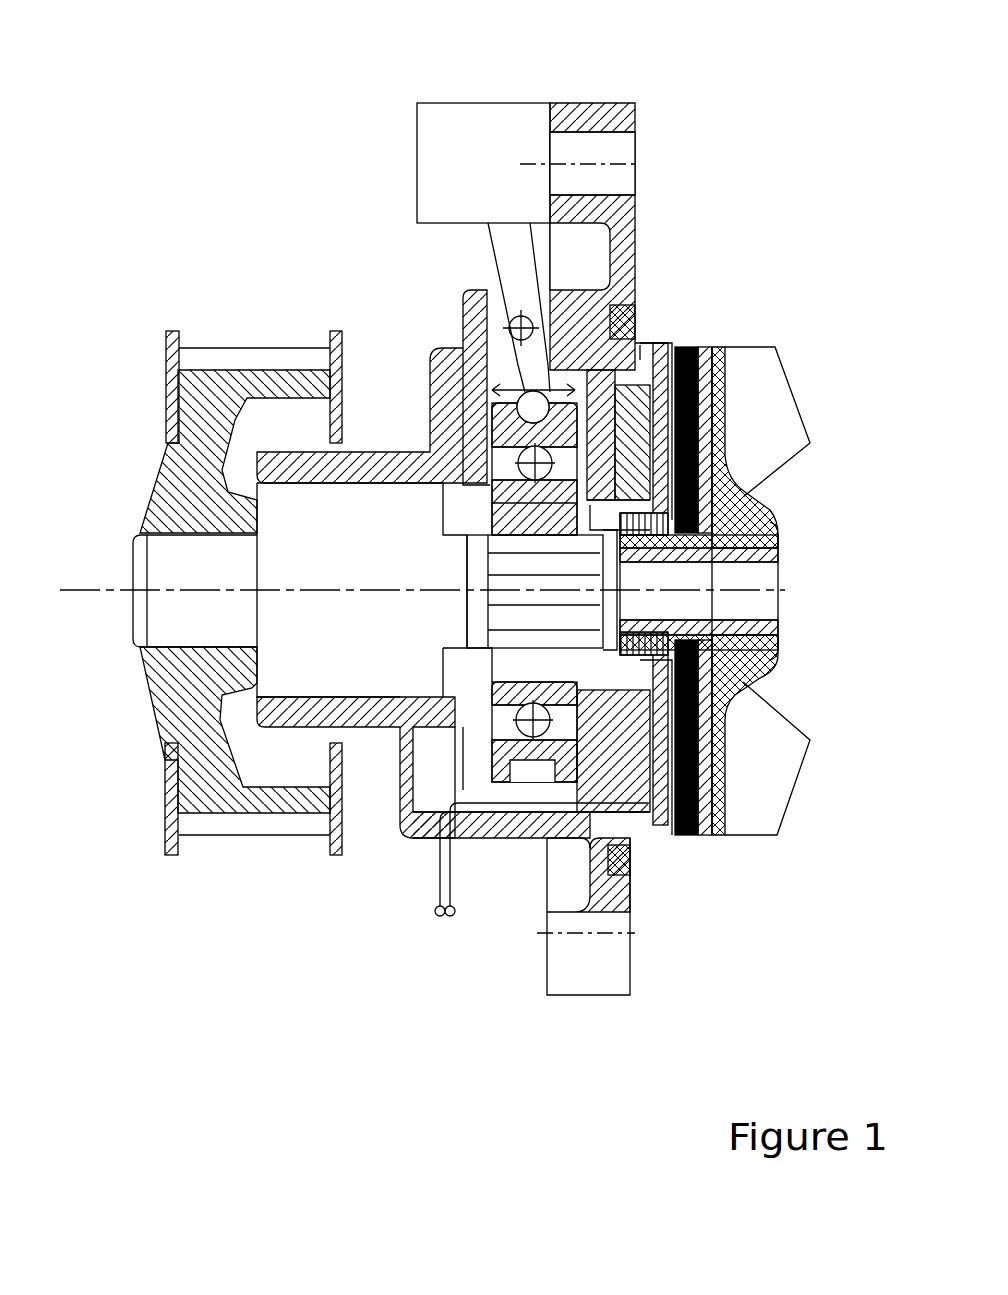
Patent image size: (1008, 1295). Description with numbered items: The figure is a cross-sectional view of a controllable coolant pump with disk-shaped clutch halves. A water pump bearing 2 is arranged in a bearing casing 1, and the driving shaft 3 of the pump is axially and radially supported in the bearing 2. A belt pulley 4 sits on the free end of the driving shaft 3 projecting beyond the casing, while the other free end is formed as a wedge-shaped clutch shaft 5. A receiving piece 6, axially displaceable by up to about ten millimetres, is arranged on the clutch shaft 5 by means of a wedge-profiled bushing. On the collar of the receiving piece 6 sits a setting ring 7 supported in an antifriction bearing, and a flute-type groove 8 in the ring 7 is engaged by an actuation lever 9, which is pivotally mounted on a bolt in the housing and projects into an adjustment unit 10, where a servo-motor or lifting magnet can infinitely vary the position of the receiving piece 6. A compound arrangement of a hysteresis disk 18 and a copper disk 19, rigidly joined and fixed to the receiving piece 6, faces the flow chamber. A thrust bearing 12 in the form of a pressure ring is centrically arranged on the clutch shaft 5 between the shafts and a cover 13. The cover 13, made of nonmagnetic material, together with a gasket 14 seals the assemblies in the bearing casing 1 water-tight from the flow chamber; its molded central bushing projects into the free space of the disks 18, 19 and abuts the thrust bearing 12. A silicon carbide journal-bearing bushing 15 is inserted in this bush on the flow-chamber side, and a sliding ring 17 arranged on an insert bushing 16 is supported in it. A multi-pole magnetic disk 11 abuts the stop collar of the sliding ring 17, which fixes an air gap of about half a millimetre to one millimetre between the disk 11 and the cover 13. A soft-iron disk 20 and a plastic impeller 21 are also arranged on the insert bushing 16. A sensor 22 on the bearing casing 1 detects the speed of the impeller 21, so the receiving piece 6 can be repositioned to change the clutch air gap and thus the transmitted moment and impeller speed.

The bearing casing 1 is at (385, 468).
The water pump bearing 2 is at (315, 575).
The driving shaft 3 is at (135, 545).
The belt pulley 4 is at (201, 445).
The clutch shaft 5 is at (510, 615).
The receiving piece 6 is at (725, 813).
The setting ring 7 is at (478, 492).
The flute-type groove 8 is at (532, 775).
The actuation lever 9 is at (488, 223).
The adjustment unit 10 is at (501, 175).
The magnetic disk 11 is at (713, 347).
The thrust bearing 12 is at (586, 367).
The cover 13 is at (725, 745).
The gasket 14 is at (632, 840).
The journal-bearing bushing 15 is at (745, 683).
The insert bushing 16 is at (778, 558).
The sliding ring 17 is at (778, 648).
The hysteresis disk 18 is at (668, 345).
The copper disk 19 is at (640, 342).
The soft-iron disk 20 is at (738, 360).
The impeller 21 is at (727, 458).
The sensor 22 is at (673, 836).